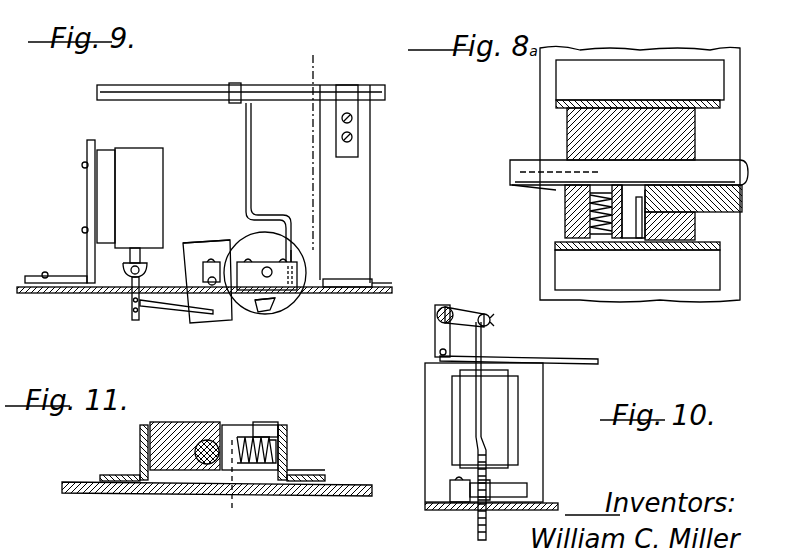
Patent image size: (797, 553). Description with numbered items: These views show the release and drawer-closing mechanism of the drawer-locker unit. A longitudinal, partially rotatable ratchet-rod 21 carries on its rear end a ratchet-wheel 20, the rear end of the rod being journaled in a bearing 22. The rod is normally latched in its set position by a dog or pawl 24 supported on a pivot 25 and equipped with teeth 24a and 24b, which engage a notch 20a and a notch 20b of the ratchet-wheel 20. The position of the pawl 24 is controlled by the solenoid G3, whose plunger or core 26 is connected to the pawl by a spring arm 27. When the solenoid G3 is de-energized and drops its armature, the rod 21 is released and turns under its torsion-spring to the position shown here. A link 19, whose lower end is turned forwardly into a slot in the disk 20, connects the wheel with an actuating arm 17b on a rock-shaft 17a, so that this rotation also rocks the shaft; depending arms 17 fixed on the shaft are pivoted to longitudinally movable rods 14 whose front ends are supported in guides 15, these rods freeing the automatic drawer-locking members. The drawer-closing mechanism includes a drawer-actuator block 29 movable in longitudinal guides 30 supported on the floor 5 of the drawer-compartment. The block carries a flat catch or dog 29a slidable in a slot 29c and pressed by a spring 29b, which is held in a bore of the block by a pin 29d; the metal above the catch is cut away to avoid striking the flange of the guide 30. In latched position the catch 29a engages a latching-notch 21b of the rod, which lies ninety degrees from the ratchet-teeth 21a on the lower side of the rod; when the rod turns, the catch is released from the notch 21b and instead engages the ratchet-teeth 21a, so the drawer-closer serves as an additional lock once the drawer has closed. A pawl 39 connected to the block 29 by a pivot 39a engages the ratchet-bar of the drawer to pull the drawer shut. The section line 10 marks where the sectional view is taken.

In FIG. 9, the base plate 5 is at (204, 290).
In FIG. 10, the base plate 5 is at (440, 508).
In FIG. 11, the base plate 5 is at (128, 492).
In FIG. 9, the bracket 10 is at (345, 61).
In FIG. 10, the arm 14 is at (582, 346).
In FIG. 9, the support 15 is at (380, 294).
In FIG. 10, the pivot bracket 17 is at (443, 333).
In FIG. 9, the rod 17a is at (147, 88).
In FIG. 9, the collar 17b is at (233, 83).
In FIG. 9, the connecting rod 19 is at (246, 160).
In FIG. 10, the connecting rod 19 is at (480, 346).
In FIG. 9, the disc 20 is at (281, 300).
In FIG. 10, the disc 20 is at (487, 492).
In FIG. 9, the disc upper part 20a is at (289, 262).
In FIG. 9, the disc lower tab 20b is at (279, 306).
In FIG. 9, the block 21 is at (297, 290).
In FIG. 8A, the block 21 is at (525, 168).
In FIG. 10, the block 21 is at (525, 492).
In FIG. 11, the block 21 is at (205, 425).
In FIG. 8A, the block portion 21a is at (556, 184).
In FIG. 11, the block portion 21a is at (210, 463).
In FIG. 11, the block axis 21b is at (252, 487).
In FIG. 9, the pivot pin 22 is at (295, 272).
In FIG. 10, the pivot pin 22 is at (457, 490).
In FIG. 9, the plate 24 is at (196, 248).
In FIG. 10, the plate 24 is at (478, 535).
In FIG. 9, the plate upper edge 24a is at (230, 243).
In FIG. 9, the plate tab 24b is at (265, 311).
In FIG. 9, the pin 25 is at (209, 280).
In FIG. 9, the bar 26 is at (130, 291).
In FIG. 9, the arm 27 is at (168, 300).
In FIG. 8A, the insert block 29 is at (613, 122).
In FIG. 11, the insert block 29 is at (223, 428).
In FIG. 8A, the insert block portion 29a is at (585, 192).
In FIG. 11, the insert block portion 29a is at (250, 437).
In FIG. 8A, the insert block portion 29b is at (603, 232).
In FIG. 11, the insert block portion 29b is at (288, 445).
In FIG. 11, the spring 29c is at (243, 428).
In FIG. 11, the insert flange 29d is at (276, 487).
In FIG. 8A, the housing 30 is at (683, 72).
In FIG. 11, the housing 30 is at (140, 450).
In FIG. 8A, the bar 39 is at (740, 205).
In FIG. 8A, the bar flange 39a is at (640, 250).
In FIG. 9, the coil G3 is at (94, 211).
In FIG. 10, the coil G3 is at (500, 426).